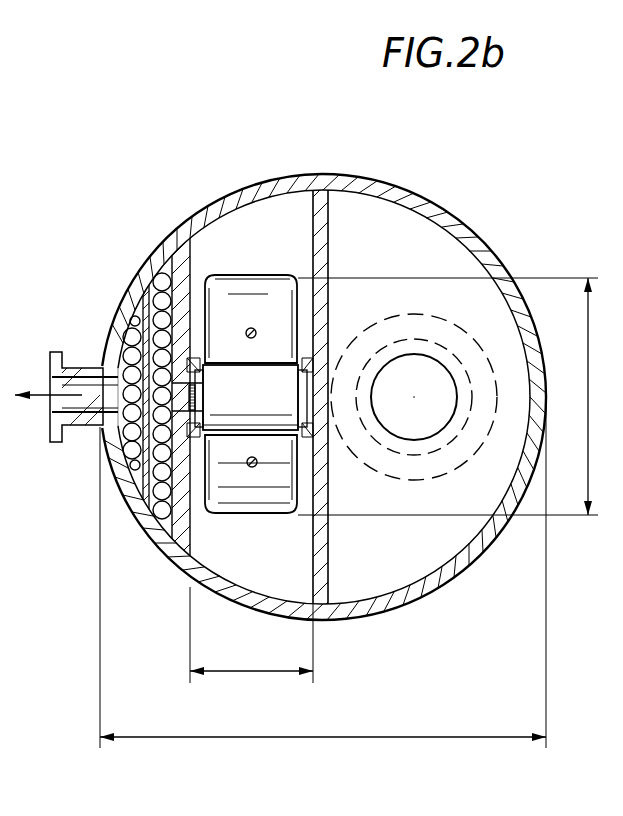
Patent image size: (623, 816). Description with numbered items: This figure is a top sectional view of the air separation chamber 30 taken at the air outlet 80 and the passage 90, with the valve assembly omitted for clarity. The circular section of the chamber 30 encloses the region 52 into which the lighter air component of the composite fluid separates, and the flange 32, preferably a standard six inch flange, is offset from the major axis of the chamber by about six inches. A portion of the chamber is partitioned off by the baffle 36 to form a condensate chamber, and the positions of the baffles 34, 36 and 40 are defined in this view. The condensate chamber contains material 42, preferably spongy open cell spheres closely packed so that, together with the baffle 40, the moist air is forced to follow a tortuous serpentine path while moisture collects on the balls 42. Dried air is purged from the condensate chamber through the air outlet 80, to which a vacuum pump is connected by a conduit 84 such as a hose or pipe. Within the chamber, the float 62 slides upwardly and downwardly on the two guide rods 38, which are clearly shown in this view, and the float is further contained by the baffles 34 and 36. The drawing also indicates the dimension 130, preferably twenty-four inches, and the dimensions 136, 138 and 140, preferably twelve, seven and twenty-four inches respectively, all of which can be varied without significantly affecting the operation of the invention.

The air separation chamber 30 is at (454, 208).
The flange 32 is at (453, 322).
The baffle 34 is at (313, 218).
The baffle 36 is at (182, 535).
The guide rods 38 is at (248, 327).
The baffle 40 is at (118, 460).
The material 42 is at (133, 333).
The region 52 is at (407, 562).
The float 62 is at (262, 274).
The air outlet 80 is at (72, 352).
The conduit 84 is at (12, 785).
The passage 90 is at (143, 303).
The dimension 130 is at (14, 280).
The dimension 136 is at (586, 480).
The dimension 138 is at (250, 672).
The dimension 140 is at (323, 594).